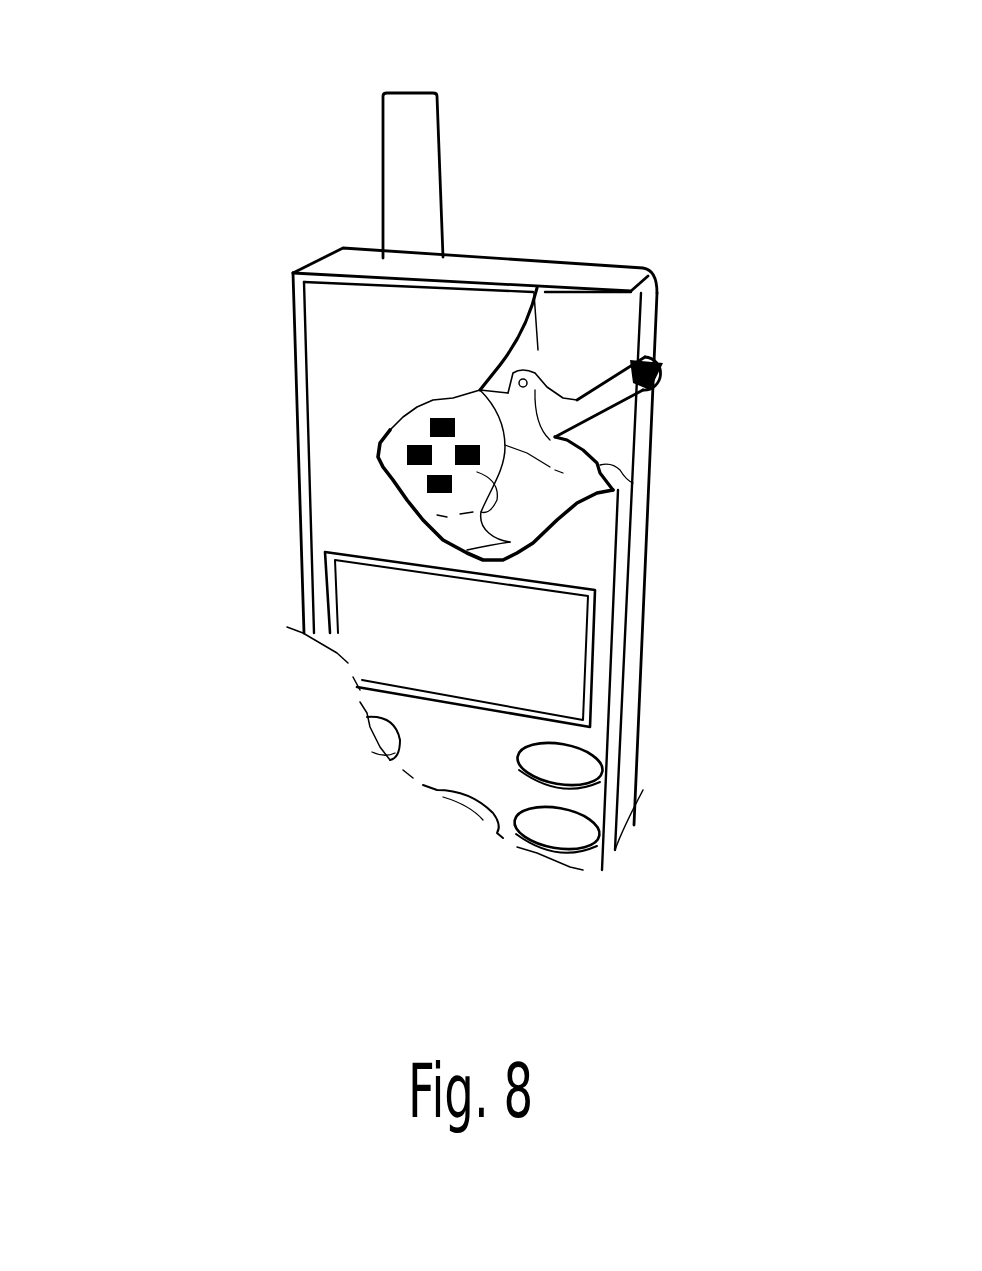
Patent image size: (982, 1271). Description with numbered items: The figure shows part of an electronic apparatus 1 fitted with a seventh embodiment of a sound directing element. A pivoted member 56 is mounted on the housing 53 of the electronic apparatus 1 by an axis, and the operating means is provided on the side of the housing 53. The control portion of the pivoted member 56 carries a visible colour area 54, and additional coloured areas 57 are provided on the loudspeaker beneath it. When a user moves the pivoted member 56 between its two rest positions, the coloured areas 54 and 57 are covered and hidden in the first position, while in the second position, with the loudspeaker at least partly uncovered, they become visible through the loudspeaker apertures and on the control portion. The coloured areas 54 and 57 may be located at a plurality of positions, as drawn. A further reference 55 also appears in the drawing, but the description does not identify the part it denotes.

The electronic apparatus 1 is at (702, 175).
The housing 53 is at (330, 353).
The visible colour area 54 is at (655, 410).
The pivot joint 55 is at (618, 470).
The pivoted member 56 is at (535, 372).
The additional coloured areas 57 is at (387, 480).